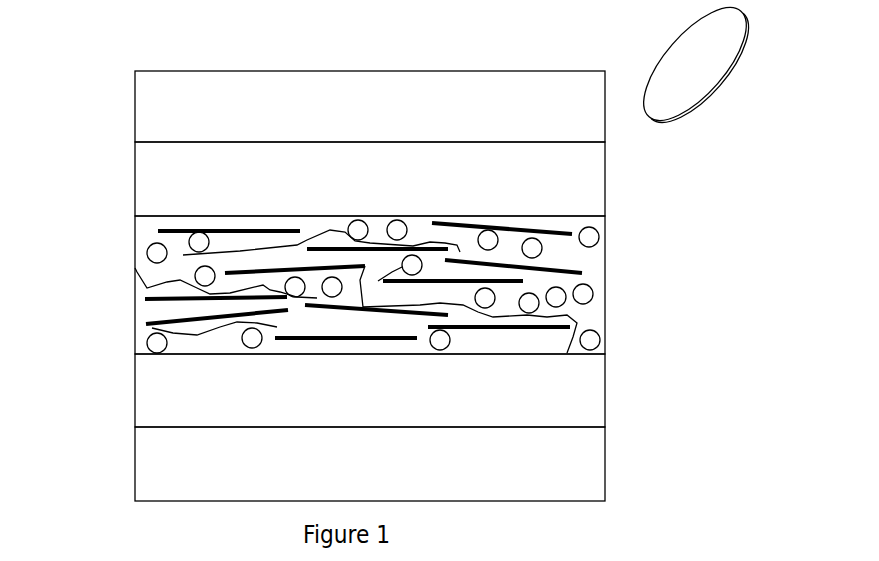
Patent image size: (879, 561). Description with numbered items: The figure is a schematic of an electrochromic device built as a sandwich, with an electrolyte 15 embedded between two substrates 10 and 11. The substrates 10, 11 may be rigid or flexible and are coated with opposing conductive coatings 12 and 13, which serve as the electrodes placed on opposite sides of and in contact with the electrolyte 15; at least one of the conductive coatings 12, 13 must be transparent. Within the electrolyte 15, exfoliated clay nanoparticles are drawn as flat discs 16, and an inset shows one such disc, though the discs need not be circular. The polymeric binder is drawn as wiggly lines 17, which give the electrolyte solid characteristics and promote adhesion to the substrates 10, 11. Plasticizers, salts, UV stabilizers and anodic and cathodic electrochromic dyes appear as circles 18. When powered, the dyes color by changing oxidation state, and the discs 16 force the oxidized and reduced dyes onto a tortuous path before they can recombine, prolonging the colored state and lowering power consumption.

The substrate 10 is at (158, 116).
The substrate 11 is at (172, 463).
The conductive coating 12 is at (147, 181).
The conductive coating 13 is at (168, 383).
The electrolyte 15 is at (590, 313).
The flat discs 16 is at (718, 85).
The wiggly lines 17 is at (143, 286).
The circles 18 is at (590, 235).